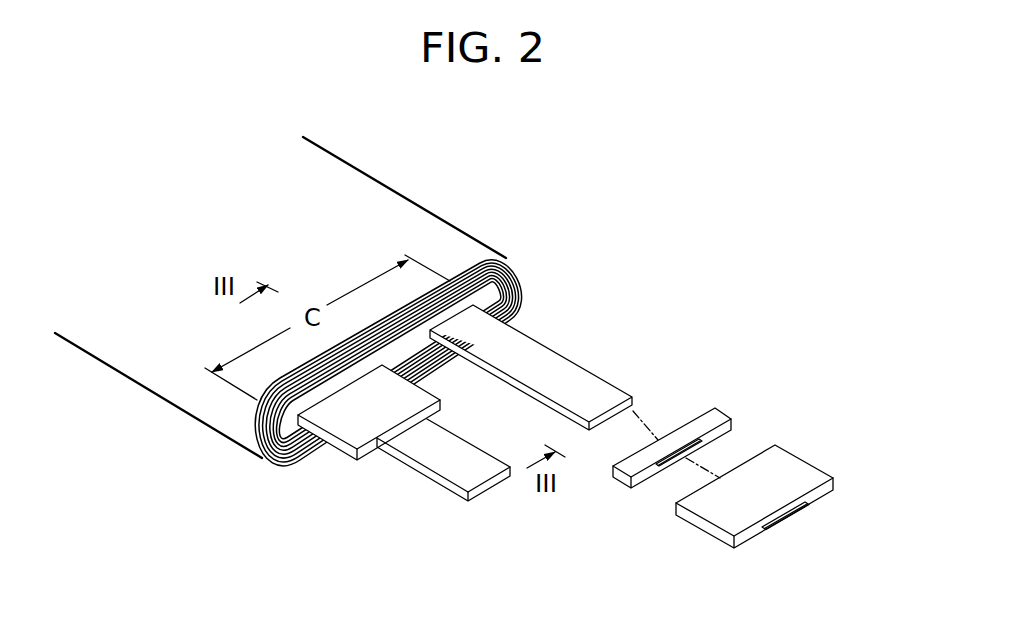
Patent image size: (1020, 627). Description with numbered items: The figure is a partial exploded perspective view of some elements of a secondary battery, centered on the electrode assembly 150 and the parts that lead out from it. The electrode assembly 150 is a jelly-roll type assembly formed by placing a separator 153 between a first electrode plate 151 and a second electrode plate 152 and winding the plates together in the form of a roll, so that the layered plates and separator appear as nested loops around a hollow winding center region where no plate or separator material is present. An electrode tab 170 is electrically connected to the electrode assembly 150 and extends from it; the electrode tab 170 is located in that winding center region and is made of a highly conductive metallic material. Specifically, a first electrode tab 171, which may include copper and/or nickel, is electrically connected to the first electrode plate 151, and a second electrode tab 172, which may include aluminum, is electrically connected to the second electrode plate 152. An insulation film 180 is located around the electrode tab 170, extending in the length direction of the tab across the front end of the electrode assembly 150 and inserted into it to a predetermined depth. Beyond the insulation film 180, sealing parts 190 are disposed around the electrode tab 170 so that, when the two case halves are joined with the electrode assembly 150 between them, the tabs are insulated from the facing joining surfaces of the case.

The electrode assembly 150 is at (390, 188).
The first electrode plate 151 is at (509, 259).
The second electrode plate 152 is at (516, 285).
The separator 153 is at (516, 268).
The electrode tab 170 is at (528, 407).
The first electrode tab 171 is at (604, 380).
The second electrode tab 172 is at (453, 481).
The insulation film 180 is at (717, 410).
The sealing part 190 is at (337, 446).